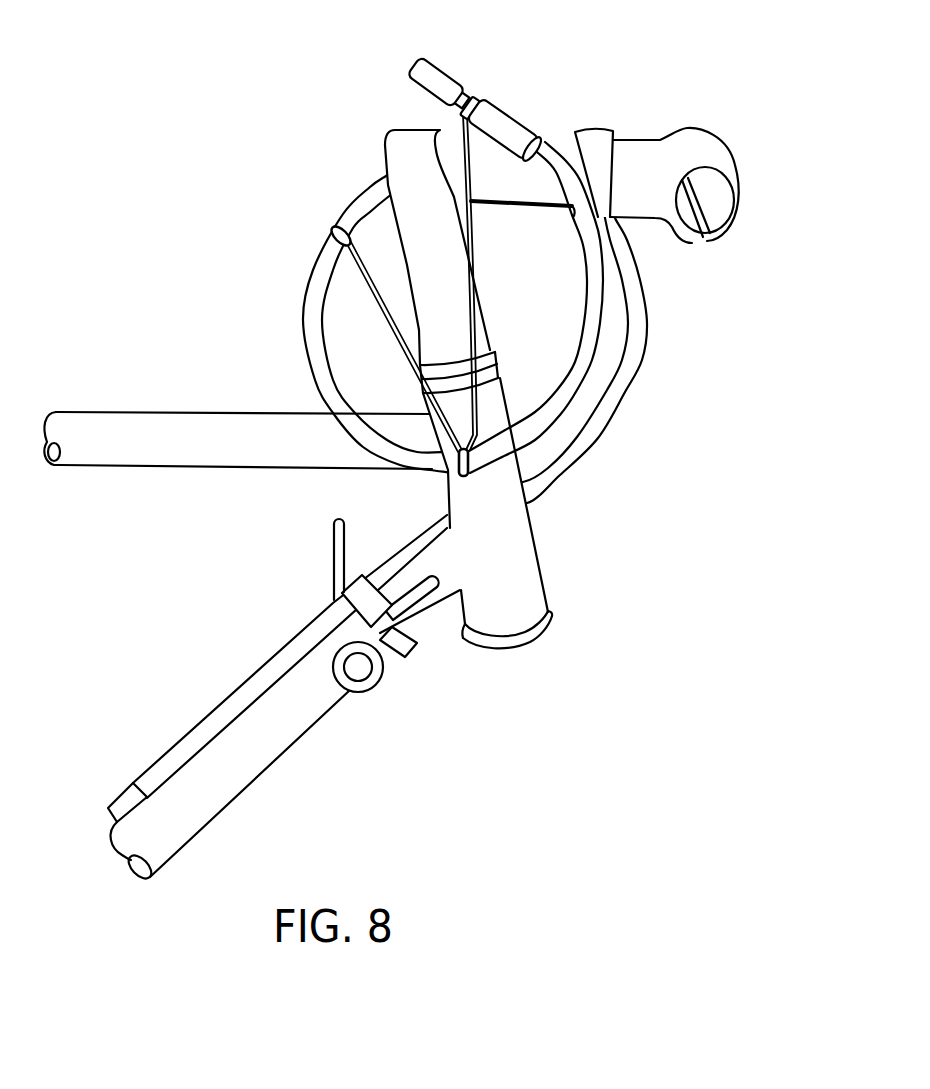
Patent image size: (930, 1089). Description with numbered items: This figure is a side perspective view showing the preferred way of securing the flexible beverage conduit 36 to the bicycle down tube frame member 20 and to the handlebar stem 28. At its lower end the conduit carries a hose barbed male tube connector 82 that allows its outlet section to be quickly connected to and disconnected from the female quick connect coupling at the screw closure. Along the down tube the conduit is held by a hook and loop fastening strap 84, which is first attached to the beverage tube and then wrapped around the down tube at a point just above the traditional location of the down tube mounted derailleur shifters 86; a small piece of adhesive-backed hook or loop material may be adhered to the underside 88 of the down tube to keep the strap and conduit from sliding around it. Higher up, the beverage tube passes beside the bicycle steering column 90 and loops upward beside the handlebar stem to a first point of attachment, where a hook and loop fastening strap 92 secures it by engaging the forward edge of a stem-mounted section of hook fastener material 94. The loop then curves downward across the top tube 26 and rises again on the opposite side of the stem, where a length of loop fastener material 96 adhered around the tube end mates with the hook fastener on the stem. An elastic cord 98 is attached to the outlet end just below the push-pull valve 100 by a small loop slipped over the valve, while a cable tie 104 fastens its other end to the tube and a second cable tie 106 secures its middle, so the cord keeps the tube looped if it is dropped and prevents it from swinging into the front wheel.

The down tube frame member 20 is at (226, 793).
The top tube 26 is at (120, 462).
The handlebar stem 28 is at (396, 163).
The conduit 36 is at (597, 441).
The hose barbed male tube connector 82 is at (128, 788).
The hook and loop fastening strap 84 is at (356, 583).
The down tube mounted derailleur shifters 86 is at (420, 594).
The underside of the down tube 88 is at (398, 656).
The bicycle steering column 90 is at (496, 508).
The hook and loop fastening strap 92 is at (594, 137).
The hook fastener material 94 is at (456, 179).
The loop fastener material 96 is at (503, 120).
The elastic cord 98 is at (473, 263).
The push-pull valve 100 is at (437, 69).
The cable tie 104 is at (334, 233).
The cable tie 106 is at (454, 470).